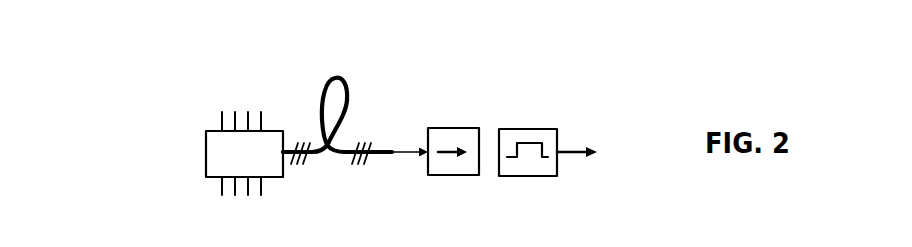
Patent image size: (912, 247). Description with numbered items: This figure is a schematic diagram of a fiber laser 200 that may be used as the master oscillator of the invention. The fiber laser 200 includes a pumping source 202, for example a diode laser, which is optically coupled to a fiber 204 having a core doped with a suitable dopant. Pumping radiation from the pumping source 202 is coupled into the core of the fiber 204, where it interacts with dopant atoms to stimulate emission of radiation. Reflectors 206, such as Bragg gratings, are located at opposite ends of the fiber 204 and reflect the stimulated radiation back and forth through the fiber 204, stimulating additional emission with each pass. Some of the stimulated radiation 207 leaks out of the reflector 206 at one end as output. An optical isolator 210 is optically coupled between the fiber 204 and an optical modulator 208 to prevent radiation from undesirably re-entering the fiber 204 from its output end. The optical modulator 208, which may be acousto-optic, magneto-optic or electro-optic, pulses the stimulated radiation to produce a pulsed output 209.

The fiber laser 200 is at (127, 80).
The pumping source 202 is at (206, 153).
The fiber 204 is at (342, 80).
The reflectors 206 is at (362, 162).
The stimulated radiation 207 is at (397, 150).
The optical modulator 208 is at (528, 177).
The pulsed output 209 is at (575, 157).
The optical isolator 210 is at (452, 129).